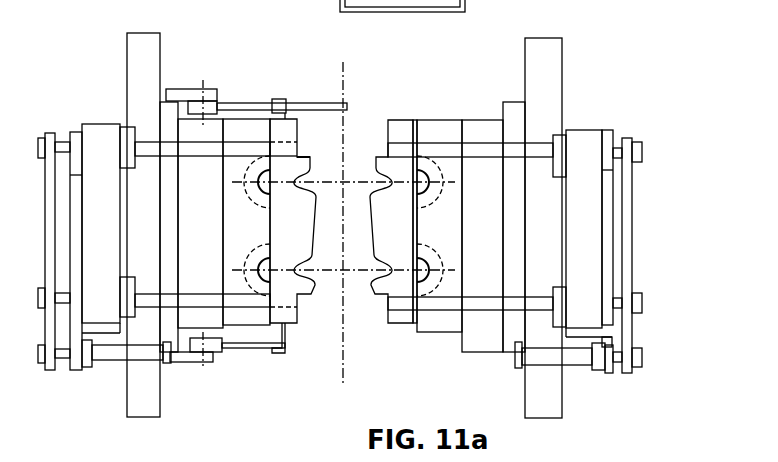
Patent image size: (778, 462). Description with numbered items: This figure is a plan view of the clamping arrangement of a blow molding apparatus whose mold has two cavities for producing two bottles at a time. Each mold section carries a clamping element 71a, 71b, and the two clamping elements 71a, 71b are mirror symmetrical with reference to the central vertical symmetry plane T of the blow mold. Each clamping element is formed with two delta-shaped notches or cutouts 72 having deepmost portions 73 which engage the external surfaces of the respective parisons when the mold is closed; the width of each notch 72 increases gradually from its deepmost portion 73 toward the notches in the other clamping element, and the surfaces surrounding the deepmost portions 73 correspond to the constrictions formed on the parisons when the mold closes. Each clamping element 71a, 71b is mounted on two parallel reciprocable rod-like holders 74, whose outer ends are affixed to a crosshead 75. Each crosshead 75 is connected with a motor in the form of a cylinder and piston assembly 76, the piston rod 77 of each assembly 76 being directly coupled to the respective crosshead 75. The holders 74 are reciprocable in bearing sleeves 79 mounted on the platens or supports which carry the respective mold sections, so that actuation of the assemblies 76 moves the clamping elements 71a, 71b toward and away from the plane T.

The central vertical symmetry plane T is at (346, 70).
The clamping element 71a is at (302, 240).
The clamping element 71b is at (393, 229).
The delta-shaped notch 72 is at (307, 176).
The deepmost portion 73 is at (268, 205).
The rod-like holder 74 is at (477, 303).
The crosshead 75 is at (628, 229).
The cylinder and piston assembly 76 is at (574, 358).
The piston rod 77 is at (617, 358).
The bearing sleeve 79 is at (582, 137).